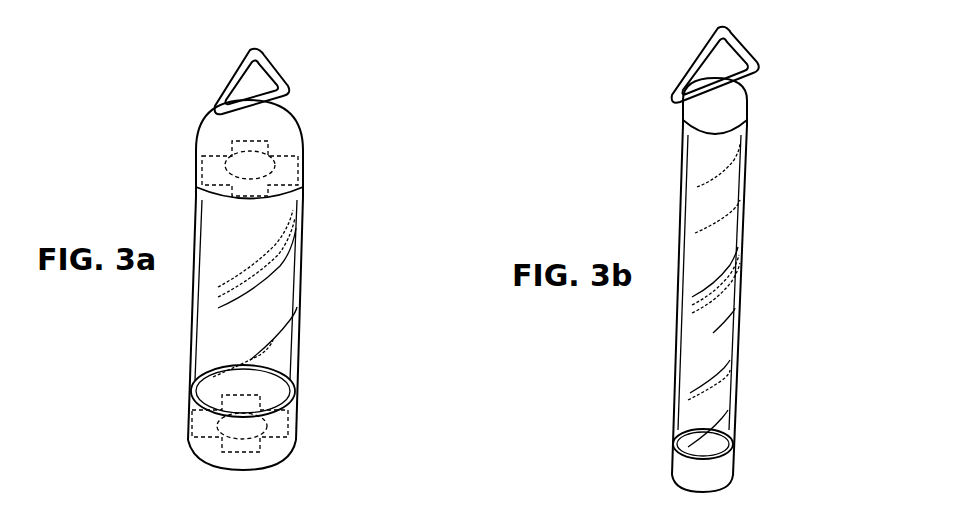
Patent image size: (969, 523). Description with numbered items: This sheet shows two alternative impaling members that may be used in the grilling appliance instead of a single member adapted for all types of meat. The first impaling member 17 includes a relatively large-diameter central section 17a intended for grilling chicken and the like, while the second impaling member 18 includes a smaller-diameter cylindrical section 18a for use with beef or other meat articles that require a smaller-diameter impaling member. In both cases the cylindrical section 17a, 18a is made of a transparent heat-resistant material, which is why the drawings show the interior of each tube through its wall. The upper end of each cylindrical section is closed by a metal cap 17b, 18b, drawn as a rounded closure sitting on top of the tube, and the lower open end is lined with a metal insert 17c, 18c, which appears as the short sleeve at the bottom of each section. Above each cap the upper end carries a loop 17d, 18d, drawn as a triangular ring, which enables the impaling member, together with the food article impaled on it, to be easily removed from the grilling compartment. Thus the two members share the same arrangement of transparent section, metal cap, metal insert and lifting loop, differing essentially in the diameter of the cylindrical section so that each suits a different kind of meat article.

In FIG. 3A, the impaling member 17 is at (192, 120).
In FIG. 3A, the central section 17a is at (300, 288).
In FIG. 3A, the metal cap 17b is at (280, 92).
In FIG. 3A, the metal insert 17c is at (293, 432).
In FIG. 3A, the loop 17d is at (277, 60).
In FIG. 3B, the impaling member 18 is at (760, 325).
In FIG. 3B, the cylindrical section 18a is at (743, 215).
In FIG. 3B, the metal cap 18b is at (747, 107).
In FIG. 3B, the metal insert 18c is at (737, 473).
In FIG. 3B, the loop 18d is at (760, 72).